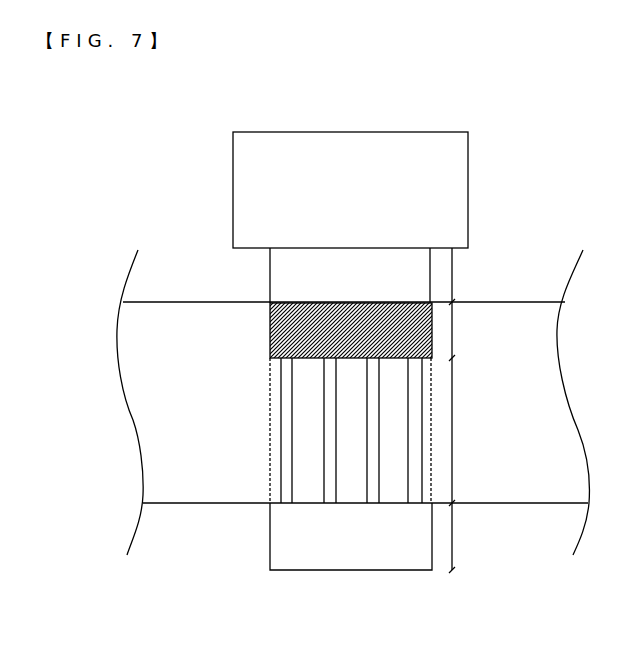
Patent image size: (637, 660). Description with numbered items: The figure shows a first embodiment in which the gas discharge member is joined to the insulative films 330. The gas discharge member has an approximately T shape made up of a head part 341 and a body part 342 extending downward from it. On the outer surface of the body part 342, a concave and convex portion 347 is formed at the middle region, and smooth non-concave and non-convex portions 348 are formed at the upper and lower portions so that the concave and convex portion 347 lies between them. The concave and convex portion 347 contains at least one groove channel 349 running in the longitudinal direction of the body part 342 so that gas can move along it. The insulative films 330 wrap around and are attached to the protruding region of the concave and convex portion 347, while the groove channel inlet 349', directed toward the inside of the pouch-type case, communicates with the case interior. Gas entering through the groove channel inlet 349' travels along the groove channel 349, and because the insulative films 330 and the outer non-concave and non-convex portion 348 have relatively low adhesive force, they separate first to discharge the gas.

The head part 341 is at (230, 200).
The insulative films 330 is at (163, 333).
The non-concave and non-convex portion 348 is at (391, 410).
The concave and convex portion 347 is at (449, 433).
The body part 342 is at (263, 530).
The groove channel 349 is at (290, 497).
The groove channel inlet 349' is at (406, 495).